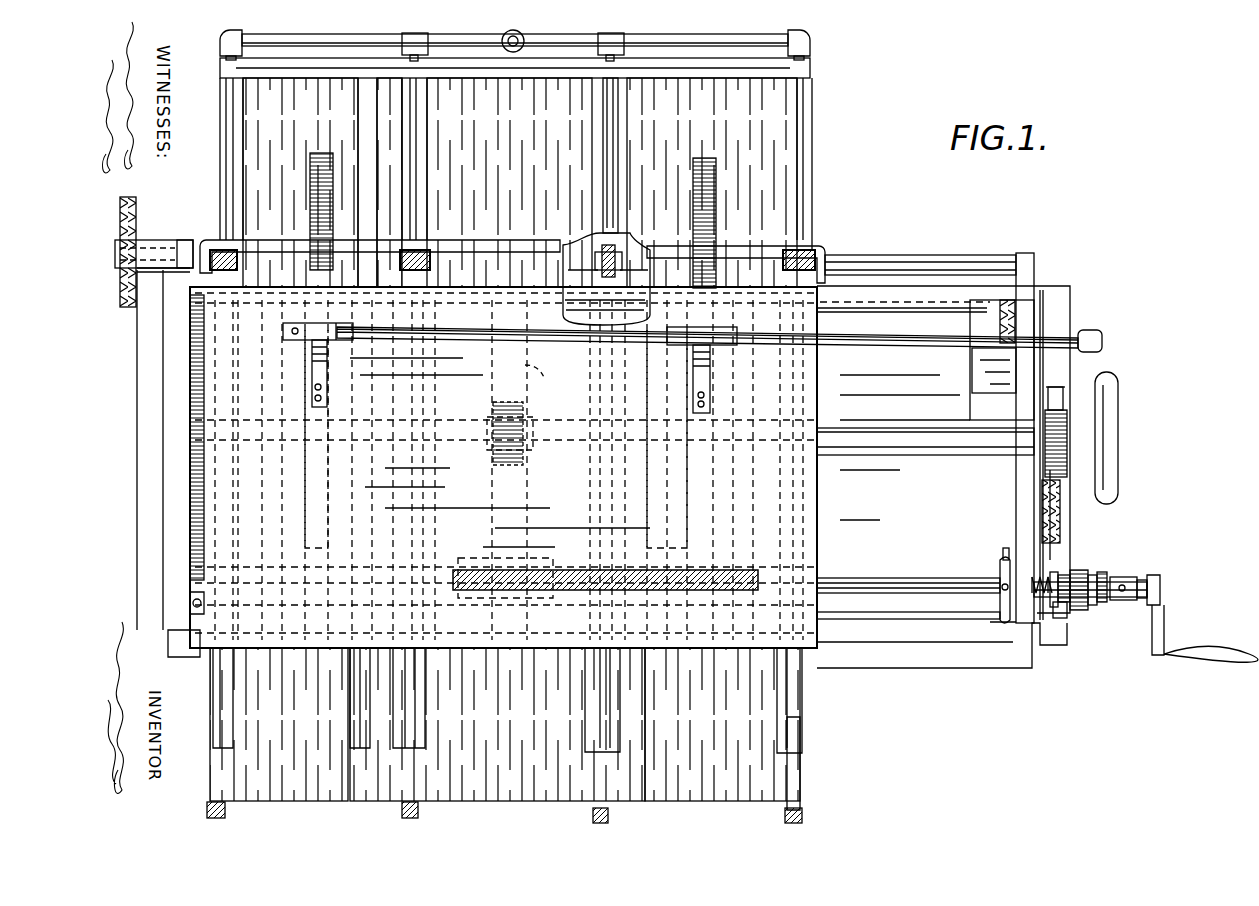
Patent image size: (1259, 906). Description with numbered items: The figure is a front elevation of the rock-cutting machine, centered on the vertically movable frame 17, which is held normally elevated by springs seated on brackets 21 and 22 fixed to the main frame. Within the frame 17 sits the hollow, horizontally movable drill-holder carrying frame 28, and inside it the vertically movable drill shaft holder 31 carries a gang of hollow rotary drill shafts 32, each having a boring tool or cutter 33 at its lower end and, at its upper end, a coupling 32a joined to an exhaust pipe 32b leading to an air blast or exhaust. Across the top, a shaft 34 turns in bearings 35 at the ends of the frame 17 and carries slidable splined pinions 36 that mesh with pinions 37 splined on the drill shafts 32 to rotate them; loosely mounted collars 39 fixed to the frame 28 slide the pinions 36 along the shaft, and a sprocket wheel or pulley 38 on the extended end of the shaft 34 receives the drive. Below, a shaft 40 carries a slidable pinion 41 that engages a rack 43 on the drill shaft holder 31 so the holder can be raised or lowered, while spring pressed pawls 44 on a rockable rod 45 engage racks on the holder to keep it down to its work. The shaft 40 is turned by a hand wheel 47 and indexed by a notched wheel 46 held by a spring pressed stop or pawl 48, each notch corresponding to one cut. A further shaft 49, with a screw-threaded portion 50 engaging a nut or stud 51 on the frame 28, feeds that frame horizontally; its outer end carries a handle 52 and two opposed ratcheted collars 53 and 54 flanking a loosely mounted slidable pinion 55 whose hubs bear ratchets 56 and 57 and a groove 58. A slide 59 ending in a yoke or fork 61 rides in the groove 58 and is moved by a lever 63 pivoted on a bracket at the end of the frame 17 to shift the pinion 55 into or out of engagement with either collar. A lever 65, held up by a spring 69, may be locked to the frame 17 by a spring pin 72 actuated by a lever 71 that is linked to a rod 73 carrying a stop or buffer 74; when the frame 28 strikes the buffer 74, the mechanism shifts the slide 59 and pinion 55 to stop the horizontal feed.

The vertically movable frame 17 is at (1050, 647).
The bracket 21 is at (975, 376).
The bracket 22 is at (188, 368).
The horizontally movable drill-holder carrying frame 28 is at (770, 493).
The vertically movable drill shaft holder 31 is at (755, 776).
The hollow rotary drill shaft 32 is at (615, 710).
The coupling 32a is at (810, 38).
The exhaust pipe 32b is at (692, 42).
The boring tool or cutter 33 is at (783, 818).
The shaft 34 is at (940, 255).
The bearing 35 is at (1030, 252).
The slidable splined pinion 36 is at (598, 248).
The pinion 37 is at (212, 268).
The sprocket wheel or pulley 38 is at (120, 218).
The collar 39 is at (602, 281).
The shaft 40 is at (902, 436).
The slidable pinion 41 is at (538, 410).
The rack 43 is at (545, 370).
The spring pressed pawl 44 is at (698, 348).
The rod 45 is at (1058, 330).
The notched wheel 46 is at (1067, 425).
The hand wheel 47 is at (1107, 432).
The spring pressed stop or pawl 48 is at (1060, 393).
The shaft 49 is at (885, 595).
The screw-threaded portion 50 is at (663, 570).
The nut or stud 51 is at (480, 558).
The handle 52 is at (1158, 624).
The ratcheted collar 53 is at (1140, 598).
The ratcheted collar 54 is at (1065, 576).
The slidable pinion 55 is at (1085, 578).
The ratchet 56 is at (1102, 602).
The ratchet 57 is at (1055, 573).
The groove 58 is at (1095, 578).
The slide 59 is at (1115, 600).
The yoke or fork 61 is at (1130, 580).
The lever 63 is at (1060, 618).
The lever 65 is at (1035, 575).
The spring 69 is at (1058, 512).
The lever 71 is at (1000, 573).
The spring pin 72 is at (1005, 548).
The rod 73 is at (932, 622).
The stop or buffer 74 is at (195, 606).